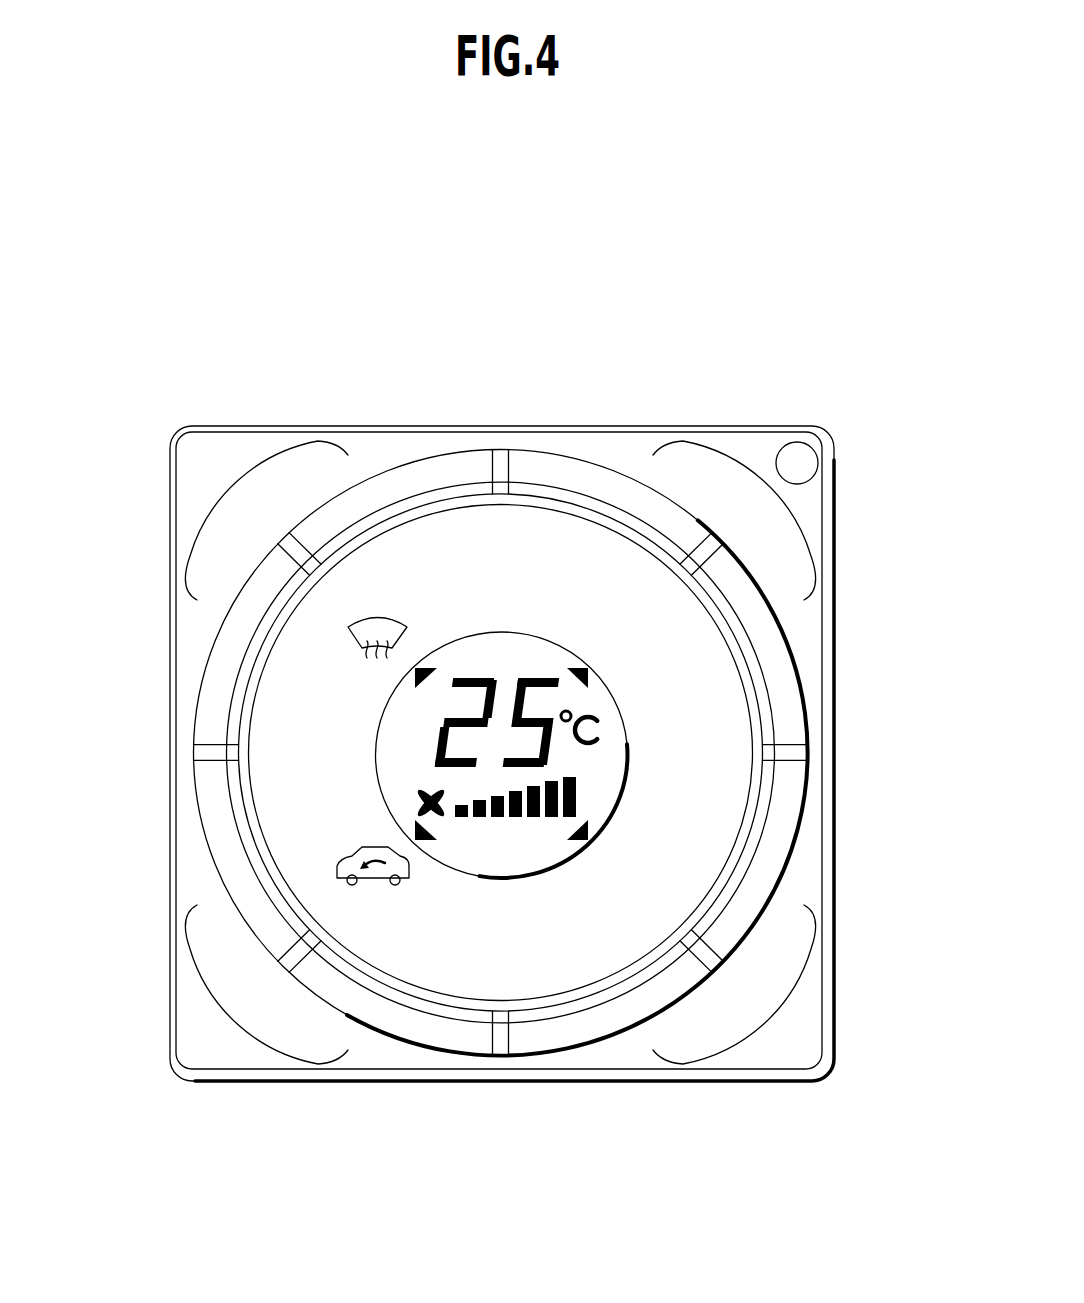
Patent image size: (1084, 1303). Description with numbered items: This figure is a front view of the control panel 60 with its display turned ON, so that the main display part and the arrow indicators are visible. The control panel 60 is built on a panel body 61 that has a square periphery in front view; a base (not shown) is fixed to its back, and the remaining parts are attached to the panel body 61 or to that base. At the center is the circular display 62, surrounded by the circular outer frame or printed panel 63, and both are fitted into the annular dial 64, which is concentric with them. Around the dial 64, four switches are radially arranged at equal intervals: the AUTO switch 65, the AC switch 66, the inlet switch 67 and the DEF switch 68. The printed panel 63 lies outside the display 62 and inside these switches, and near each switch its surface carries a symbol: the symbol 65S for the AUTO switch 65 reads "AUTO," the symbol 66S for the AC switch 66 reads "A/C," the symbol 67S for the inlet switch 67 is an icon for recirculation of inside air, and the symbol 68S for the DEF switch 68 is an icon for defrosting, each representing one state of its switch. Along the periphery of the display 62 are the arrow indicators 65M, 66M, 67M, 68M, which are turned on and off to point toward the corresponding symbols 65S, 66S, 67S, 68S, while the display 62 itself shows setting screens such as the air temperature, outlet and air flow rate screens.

The control panel 60 is at (673, 360).
The panel body 61 is at (178, 749).
The display 62 is at (603, 763).
The outer frame (printed panel) 63 is at (740, 730).
The dial 64 is at (793, 698).
The AUTO switch 65 is at (812, 497).
The AC switch 66 is at (803, 1032).
The inlet switch 67 is at (197, 1033).
The DEF switch 68 is at (197, 470).
The symbol for AUTO switch 65S is at (622, 613).
The symbol for AC switch 66S is at (628, 886).
The symbol for inlet switch 67S is at (372, 892).
The symbol for DEF switch 68S is at (378, 613).
The arrow indicator 65M is at (571, 665).
The arrow indicator 66M is at (571, 842).
The arrow indicator 67M is at (425, 840).
The arrow indicator 68M is at (425, 668).